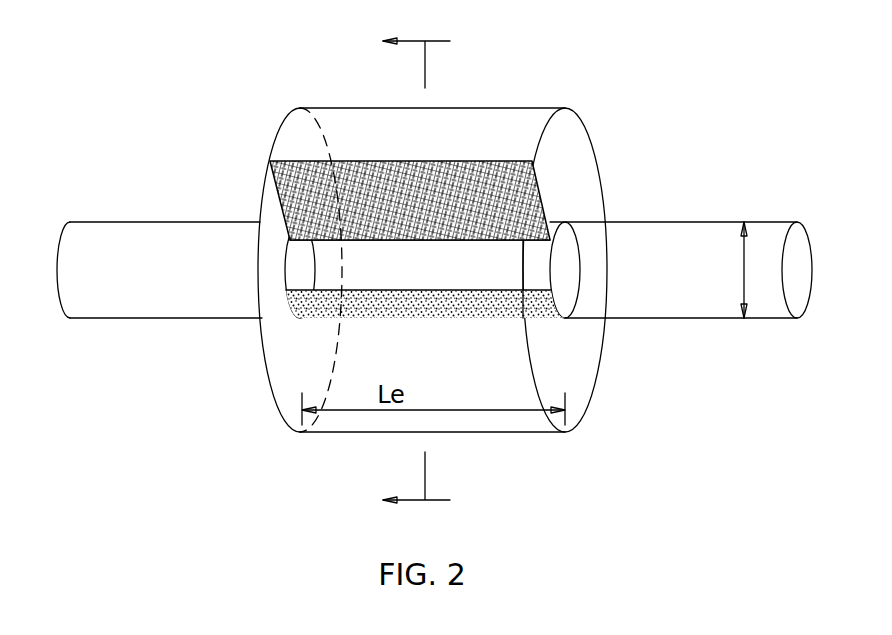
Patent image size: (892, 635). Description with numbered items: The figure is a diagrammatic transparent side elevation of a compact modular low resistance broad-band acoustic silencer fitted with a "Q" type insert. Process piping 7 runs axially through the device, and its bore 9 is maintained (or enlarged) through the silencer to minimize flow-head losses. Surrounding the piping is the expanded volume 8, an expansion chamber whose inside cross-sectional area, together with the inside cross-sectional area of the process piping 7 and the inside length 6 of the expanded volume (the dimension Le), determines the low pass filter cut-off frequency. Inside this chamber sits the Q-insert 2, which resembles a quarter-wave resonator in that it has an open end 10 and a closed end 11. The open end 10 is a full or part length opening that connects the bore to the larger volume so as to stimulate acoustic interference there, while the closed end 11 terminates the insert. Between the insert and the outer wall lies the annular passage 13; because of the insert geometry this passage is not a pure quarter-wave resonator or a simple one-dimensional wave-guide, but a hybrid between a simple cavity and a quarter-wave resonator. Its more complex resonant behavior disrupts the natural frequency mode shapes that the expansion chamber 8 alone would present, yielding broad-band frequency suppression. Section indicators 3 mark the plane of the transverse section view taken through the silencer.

The Q-insert 2 is at (508, 318).
The section line 3 is at (416, 273).
The inside length of the expanded volume 6 is at (386, 432).
The process piping 7 is at (165, 222).
The expanded volume 8 is at (276, 136).
The process piping bore 9 is at (733, 270).
The opening 10 is at (528, 268).
The closed end 11 is at (540, 184).
The annular passage 13 is at (487, 133).